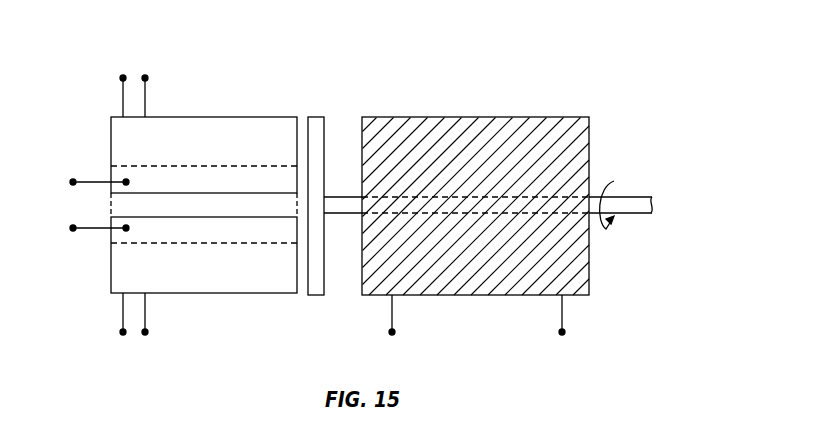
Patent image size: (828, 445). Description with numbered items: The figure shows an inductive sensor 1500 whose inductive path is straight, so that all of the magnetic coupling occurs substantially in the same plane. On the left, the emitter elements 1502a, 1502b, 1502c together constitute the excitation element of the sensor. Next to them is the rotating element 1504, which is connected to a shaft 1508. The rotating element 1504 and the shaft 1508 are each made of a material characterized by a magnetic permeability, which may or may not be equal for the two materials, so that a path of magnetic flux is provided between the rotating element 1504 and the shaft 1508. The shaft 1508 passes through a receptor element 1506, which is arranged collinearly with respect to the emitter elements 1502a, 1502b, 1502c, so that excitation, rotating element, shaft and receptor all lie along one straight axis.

The inductive sensor 1500 is at (638, 74).
The emitter element 1502a is at (243, 295).
The emitter element 1502b is at (207, 165).
The emitter element 1502c is at (243, 117).
The rotating element 1504 is at (317, 117).
The receptor element 1506 is at (592, 135).
The shaft 1508 is at (638, 197).